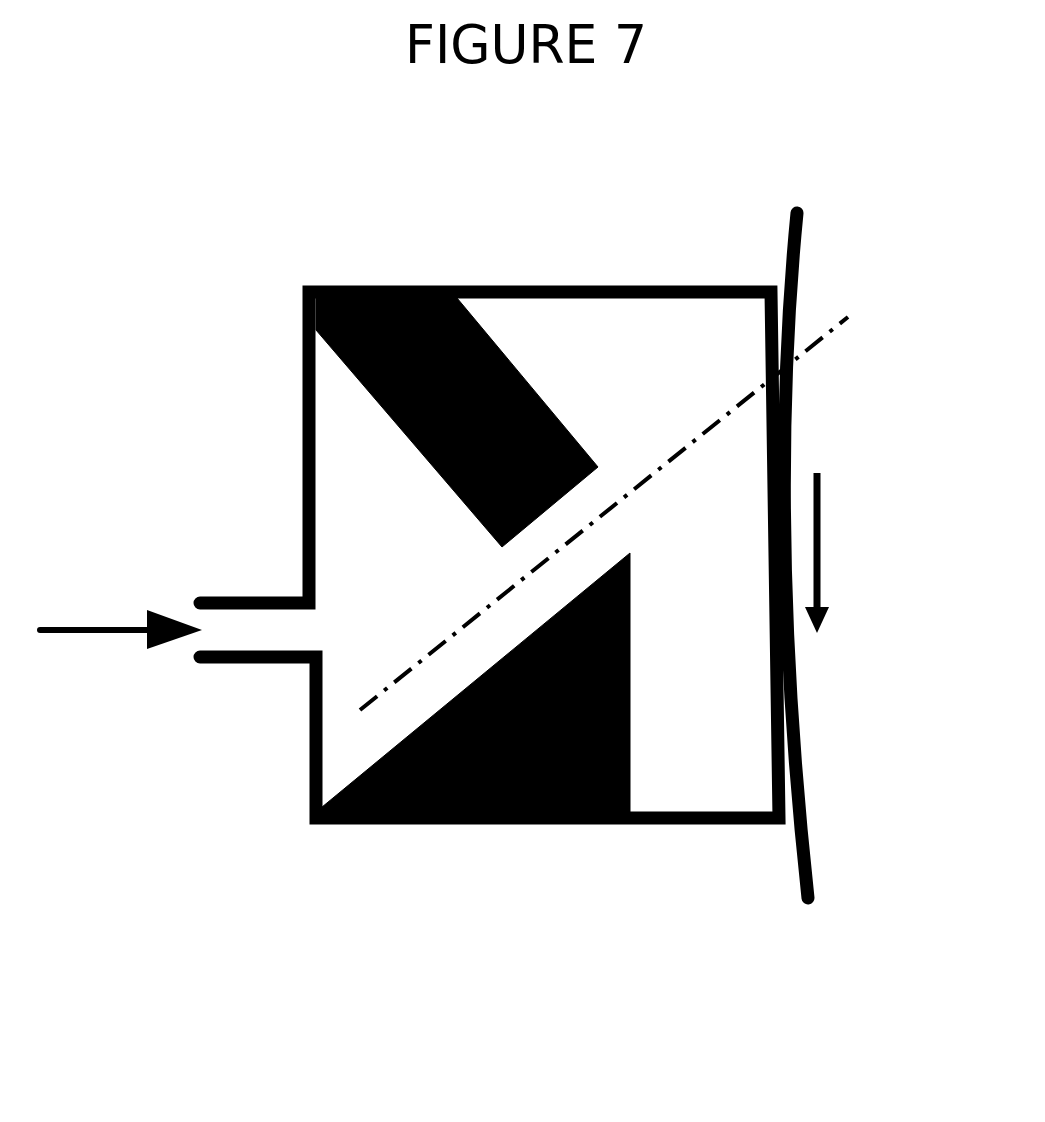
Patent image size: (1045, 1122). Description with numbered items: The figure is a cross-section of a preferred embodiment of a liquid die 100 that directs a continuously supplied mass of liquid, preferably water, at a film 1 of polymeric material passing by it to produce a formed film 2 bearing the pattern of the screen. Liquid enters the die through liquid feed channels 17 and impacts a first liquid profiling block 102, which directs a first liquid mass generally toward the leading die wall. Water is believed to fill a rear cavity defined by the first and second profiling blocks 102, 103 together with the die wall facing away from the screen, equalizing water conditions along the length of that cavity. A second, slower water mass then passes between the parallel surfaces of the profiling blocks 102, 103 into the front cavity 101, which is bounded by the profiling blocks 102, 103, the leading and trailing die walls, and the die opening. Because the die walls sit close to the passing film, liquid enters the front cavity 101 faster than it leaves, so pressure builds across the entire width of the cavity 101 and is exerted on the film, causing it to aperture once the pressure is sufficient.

The film 1 is at (803, 233).
The formed film 2 is at (813, 885).
The liquid feed channels 17 is at (228, 663).
The liquid die 100 is at (653, 825).
The front cavity 101 is at (723, 772).
The first liquid profiling block 102 is at (630, 633).
The second liquid profiling block 103 is at (577, 487).